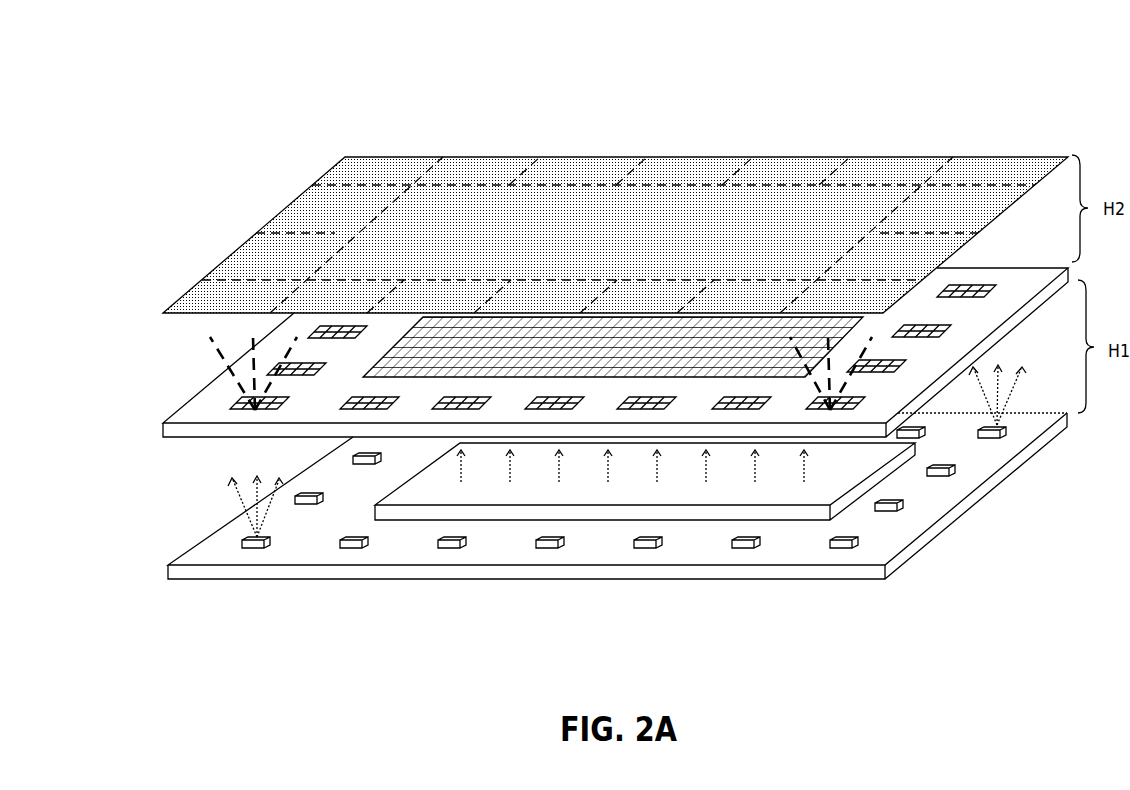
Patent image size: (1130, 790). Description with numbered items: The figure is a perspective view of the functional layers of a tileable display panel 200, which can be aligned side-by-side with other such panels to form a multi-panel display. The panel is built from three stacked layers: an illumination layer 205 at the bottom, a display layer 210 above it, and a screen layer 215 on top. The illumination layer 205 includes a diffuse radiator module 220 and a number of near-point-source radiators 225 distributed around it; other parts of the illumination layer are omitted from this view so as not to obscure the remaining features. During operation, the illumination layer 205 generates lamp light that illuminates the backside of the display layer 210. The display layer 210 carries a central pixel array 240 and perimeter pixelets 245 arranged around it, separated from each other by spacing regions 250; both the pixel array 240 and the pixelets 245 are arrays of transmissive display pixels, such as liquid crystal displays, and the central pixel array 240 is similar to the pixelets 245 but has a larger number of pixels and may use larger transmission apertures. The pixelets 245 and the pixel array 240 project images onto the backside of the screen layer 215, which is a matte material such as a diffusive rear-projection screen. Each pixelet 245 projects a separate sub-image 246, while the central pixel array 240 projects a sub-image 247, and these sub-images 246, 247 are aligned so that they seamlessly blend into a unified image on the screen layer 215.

The tileable display panel 200 is at (263, 74).
The illumination layer 205 is at (222, 532).
The display layer 210 is at (196, 394).
The screen layer 215 is at (230, 254).
The diffuse radiator module 220 is at (599, 496).
The near-point-source radiators 225 is at (258, 550).
The central pixel array 240 is at (625, 359).
The perimeter pixelets 245 is at (283, 398).
The sub-image 246 is at (561, 307).
The sub-image 247 is at (661, 244).
The spacing regions 250 is at (986, 330).